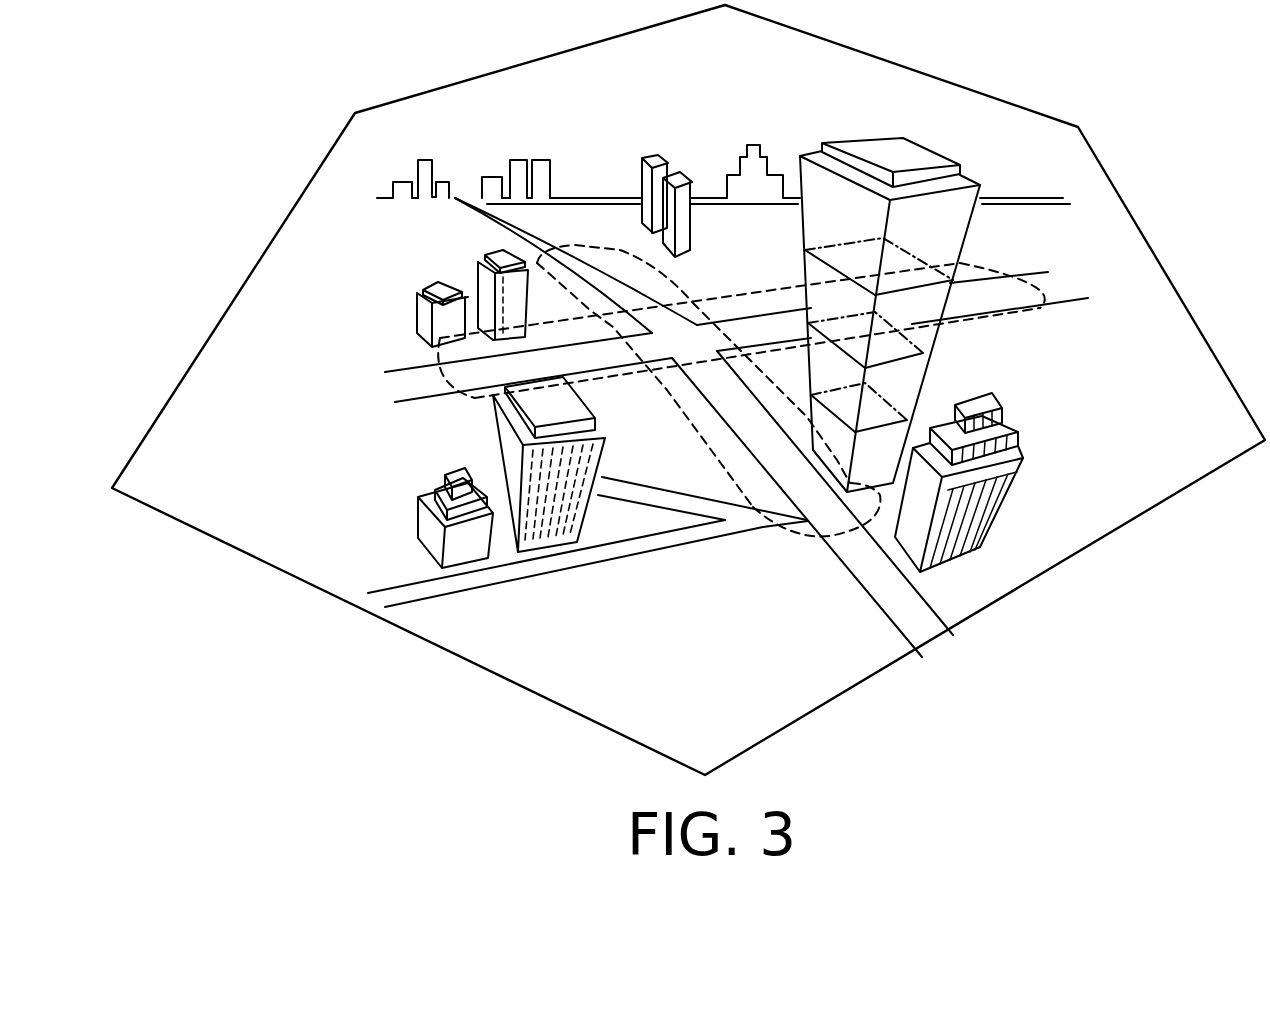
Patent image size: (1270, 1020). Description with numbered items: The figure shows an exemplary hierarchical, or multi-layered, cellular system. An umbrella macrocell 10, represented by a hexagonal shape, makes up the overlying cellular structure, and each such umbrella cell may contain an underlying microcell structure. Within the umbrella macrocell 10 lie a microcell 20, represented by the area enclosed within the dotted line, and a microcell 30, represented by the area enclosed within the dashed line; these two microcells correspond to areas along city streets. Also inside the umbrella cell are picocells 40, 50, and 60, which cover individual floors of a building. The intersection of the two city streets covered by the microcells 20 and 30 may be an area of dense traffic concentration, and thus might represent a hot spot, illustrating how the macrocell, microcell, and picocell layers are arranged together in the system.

The umbrella macrocell 10 is at (360, 608).
The microcell 20 is at (741, 385).
The microcell 30 is at (440, 368).
The picocell 40 is at (917, 315).
The picocell 50 is at (910, 338).
The picocell 60 is at (867, 490).